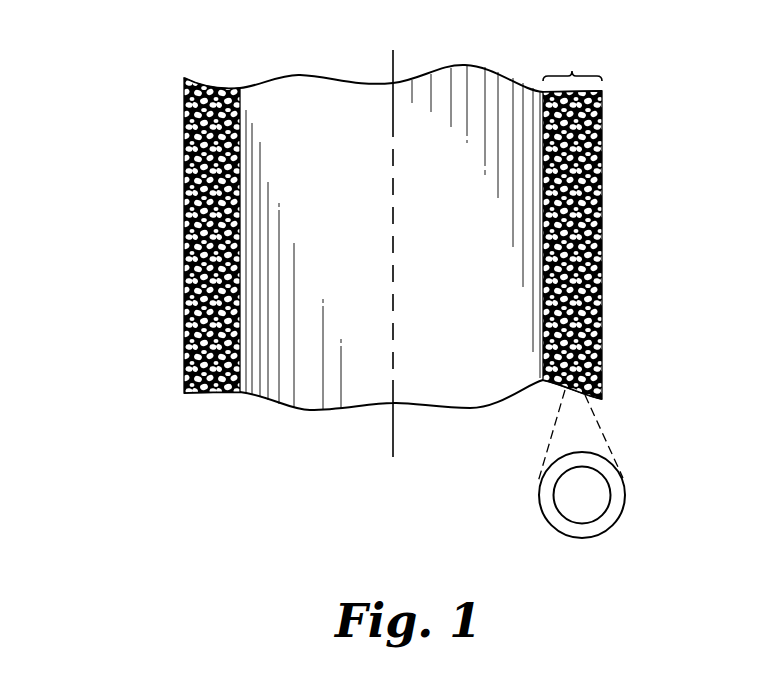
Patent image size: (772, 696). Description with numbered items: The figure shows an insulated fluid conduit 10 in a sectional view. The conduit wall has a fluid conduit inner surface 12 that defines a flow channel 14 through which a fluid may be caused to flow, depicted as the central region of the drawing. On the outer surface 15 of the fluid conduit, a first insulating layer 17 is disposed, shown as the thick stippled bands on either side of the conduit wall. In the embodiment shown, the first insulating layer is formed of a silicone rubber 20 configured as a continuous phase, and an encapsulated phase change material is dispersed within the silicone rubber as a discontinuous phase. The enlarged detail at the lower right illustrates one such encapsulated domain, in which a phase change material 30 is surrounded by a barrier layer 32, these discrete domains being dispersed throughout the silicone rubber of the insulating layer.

The insulated fluid conduit 10 is at (128, 71).
The fluid conduit inner surface 12 is at (242, 110).
The flow channel 14 is at (472, 189).
The outer surface 15 is at (238, 90).
The first insulating layer 17 is at (572, 61).
The silicone rubber 20 is at (603, 250).
The phase change material 30 is at (186, 346).
The barrier layer 32 is at (546, 501).